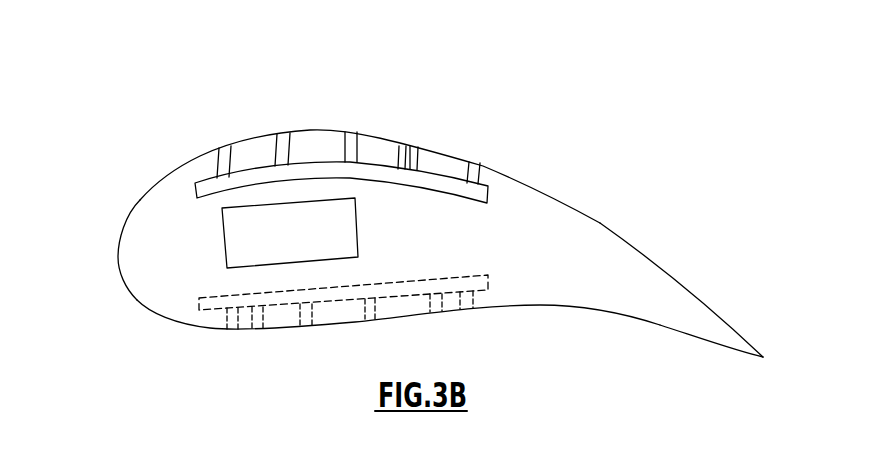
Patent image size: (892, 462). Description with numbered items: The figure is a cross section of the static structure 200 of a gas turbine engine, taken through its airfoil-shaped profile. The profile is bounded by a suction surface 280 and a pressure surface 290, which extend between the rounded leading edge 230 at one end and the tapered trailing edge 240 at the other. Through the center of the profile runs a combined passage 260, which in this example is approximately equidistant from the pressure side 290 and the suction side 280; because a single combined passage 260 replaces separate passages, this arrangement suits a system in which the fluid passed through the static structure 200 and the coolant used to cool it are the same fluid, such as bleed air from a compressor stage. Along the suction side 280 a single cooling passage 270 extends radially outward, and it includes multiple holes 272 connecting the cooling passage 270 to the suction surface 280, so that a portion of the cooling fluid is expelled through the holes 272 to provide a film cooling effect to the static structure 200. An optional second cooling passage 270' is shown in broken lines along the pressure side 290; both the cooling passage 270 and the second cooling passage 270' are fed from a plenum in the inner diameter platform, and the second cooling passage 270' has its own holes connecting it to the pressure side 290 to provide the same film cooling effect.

The static structure 200 is at (426, 253).
The leading edge 230 is at (119, 263).
The trailing edge 240 is at (763, 357).
The combined passage 260 is at (310, 245).
The cooling passage 270 is at (362, 120).
The second optional cooling passage 270' is at (343, 325).
The holes 272 is at (294, 141).
The suction surface 280 is at (332, 132).
The pressure surface 290 is at (458, 309).